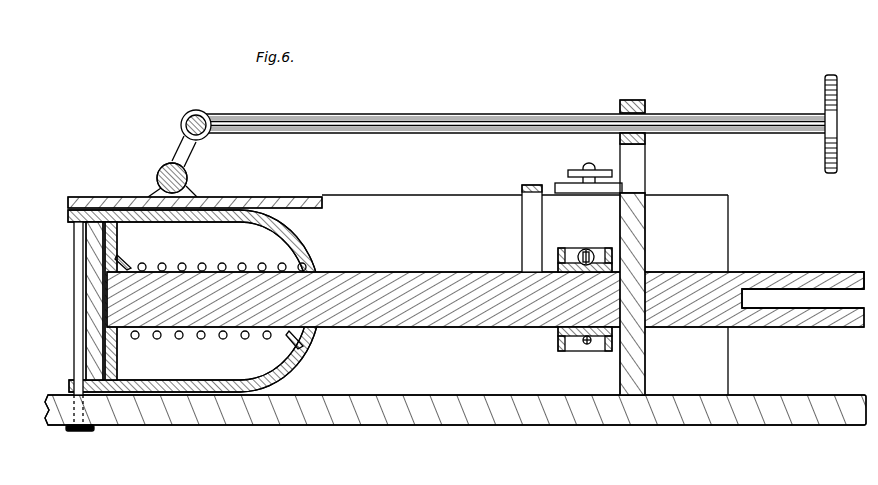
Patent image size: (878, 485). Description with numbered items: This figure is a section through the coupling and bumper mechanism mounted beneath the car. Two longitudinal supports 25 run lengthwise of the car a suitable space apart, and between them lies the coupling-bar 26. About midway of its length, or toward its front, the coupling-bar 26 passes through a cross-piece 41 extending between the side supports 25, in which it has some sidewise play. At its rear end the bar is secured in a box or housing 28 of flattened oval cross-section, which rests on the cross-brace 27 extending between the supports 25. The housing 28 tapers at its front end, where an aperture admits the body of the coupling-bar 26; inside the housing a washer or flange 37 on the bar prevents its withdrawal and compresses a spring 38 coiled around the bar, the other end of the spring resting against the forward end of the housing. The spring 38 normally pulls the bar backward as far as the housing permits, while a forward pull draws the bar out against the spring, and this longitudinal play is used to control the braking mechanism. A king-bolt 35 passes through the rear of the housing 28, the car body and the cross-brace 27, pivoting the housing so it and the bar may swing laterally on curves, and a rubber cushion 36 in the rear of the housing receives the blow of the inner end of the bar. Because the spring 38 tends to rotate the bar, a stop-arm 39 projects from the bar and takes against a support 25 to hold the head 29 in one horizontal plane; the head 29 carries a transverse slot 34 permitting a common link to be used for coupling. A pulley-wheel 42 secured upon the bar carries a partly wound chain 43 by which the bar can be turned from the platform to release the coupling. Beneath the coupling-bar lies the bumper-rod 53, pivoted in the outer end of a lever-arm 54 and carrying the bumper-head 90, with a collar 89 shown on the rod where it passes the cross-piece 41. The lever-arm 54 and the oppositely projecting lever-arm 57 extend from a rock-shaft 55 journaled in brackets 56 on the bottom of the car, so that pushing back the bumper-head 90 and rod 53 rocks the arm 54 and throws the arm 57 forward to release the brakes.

The support 25 is at (455, 310).
The coupling-bar 26 is at (430, 272).
The cross-brace 27 is at (104, 199).
The box or housing 28 is at (280, 376).
The head 29 is at (808, 272).
The slot 34 is at (803, 298).
The king-bolt 35 is at (74, 340).
The cushion 36 is at (85, 270).
The flange 37 is at (122, 301).
The spring 38 is at (199, 340).
The stop-arm 39 is at (532, 228).
The cross-piece 41 is at (646, 246).
The pulley-wheel 42 is at (563, 250).
The chain 43 is at (596, 244).
The bumper-rod 53 is at (414, 133).
The lever-arm 54 is at (192, 151).
The rock-shaft 55 is at (188, 177).
The bracket 56 is at (191, 190).
The lever-arm 57 is at (157, 196).
The collar 89 is at (646, 141).
The bumper-head 90 is at (838, 122).